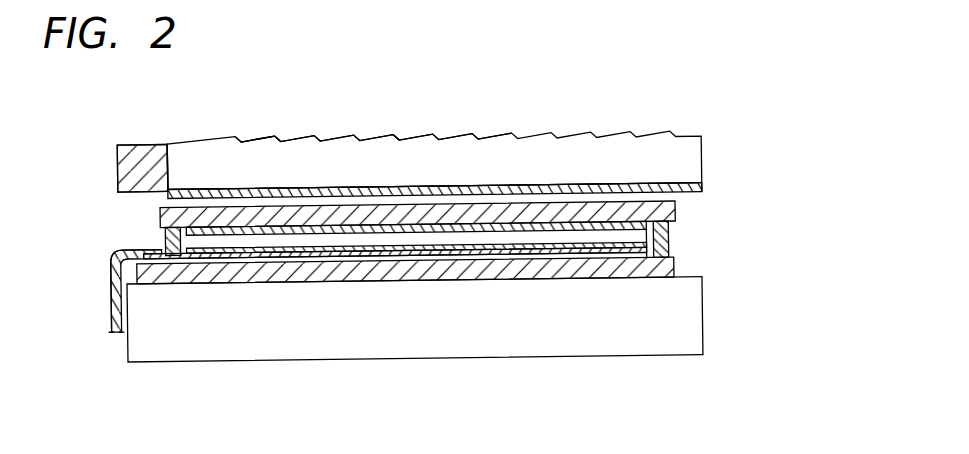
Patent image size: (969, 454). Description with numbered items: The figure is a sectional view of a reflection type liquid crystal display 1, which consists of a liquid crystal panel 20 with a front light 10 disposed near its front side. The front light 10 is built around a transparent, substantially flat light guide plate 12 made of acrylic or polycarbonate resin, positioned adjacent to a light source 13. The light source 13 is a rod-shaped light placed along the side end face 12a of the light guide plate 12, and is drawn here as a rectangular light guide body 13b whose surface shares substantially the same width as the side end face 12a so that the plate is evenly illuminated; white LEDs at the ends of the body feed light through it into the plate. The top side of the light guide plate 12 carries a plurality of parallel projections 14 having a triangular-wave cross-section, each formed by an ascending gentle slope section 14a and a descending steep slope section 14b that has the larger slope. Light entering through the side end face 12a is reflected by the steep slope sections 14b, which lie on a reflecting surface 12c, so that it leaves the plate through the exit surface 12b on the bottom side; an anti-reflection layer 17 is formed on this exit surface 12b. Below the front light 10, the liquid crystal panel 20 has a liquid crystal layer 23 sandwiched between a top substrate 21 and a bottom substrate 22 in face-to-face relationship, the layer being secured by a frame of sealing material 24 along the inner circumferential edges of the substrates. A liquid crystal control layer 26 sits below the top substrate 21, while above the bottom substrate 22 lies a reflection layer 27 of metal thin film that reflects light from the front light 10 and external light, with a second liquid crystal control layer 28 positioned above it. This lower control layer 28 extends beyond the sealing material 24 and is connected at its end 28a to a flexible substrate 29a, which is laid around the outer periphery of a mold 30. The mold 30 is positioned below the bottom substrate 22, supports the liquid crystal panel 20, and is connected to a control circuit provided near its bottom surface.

The liquid crystal display 1 is at (648, 106).
The front light 10 is at (694, 136).
The light guide plate 12 is at (343, 147).
The side end face 12a is at (167, 162).
The exit surface 12b is at (582, 184).
The reflecting surface 12c is at (462, 135).
The light source 13 is at (142, 168).
The light guide body 13b is at (131, 148).
The projections 14 is at (312, 74).
The gentle slope section 14a is at (259, 140).
The steep slope section 14b is at (283, 140).
The anti-reflection layer 17 is at (706, 183).
The liquid crystal panel 20 is at (657, 279).
The top substrate 21 is at (678, 211).
The bottom substrate 22 is at (672, 265).
The liquid crystal layer 23 is at (670, 230).
The sealing material 24 is at (174, 255).
The liquid crystal control layer 26 is at (450, 237).
The reflection layer 27 is at (527, 258).
The liquid crystal control layer 28 is at (594, 251).
The end 28a is at (153, 260).
The flexible substrate 29a is at (116, 252).
The mold 30 is at (338, 348).